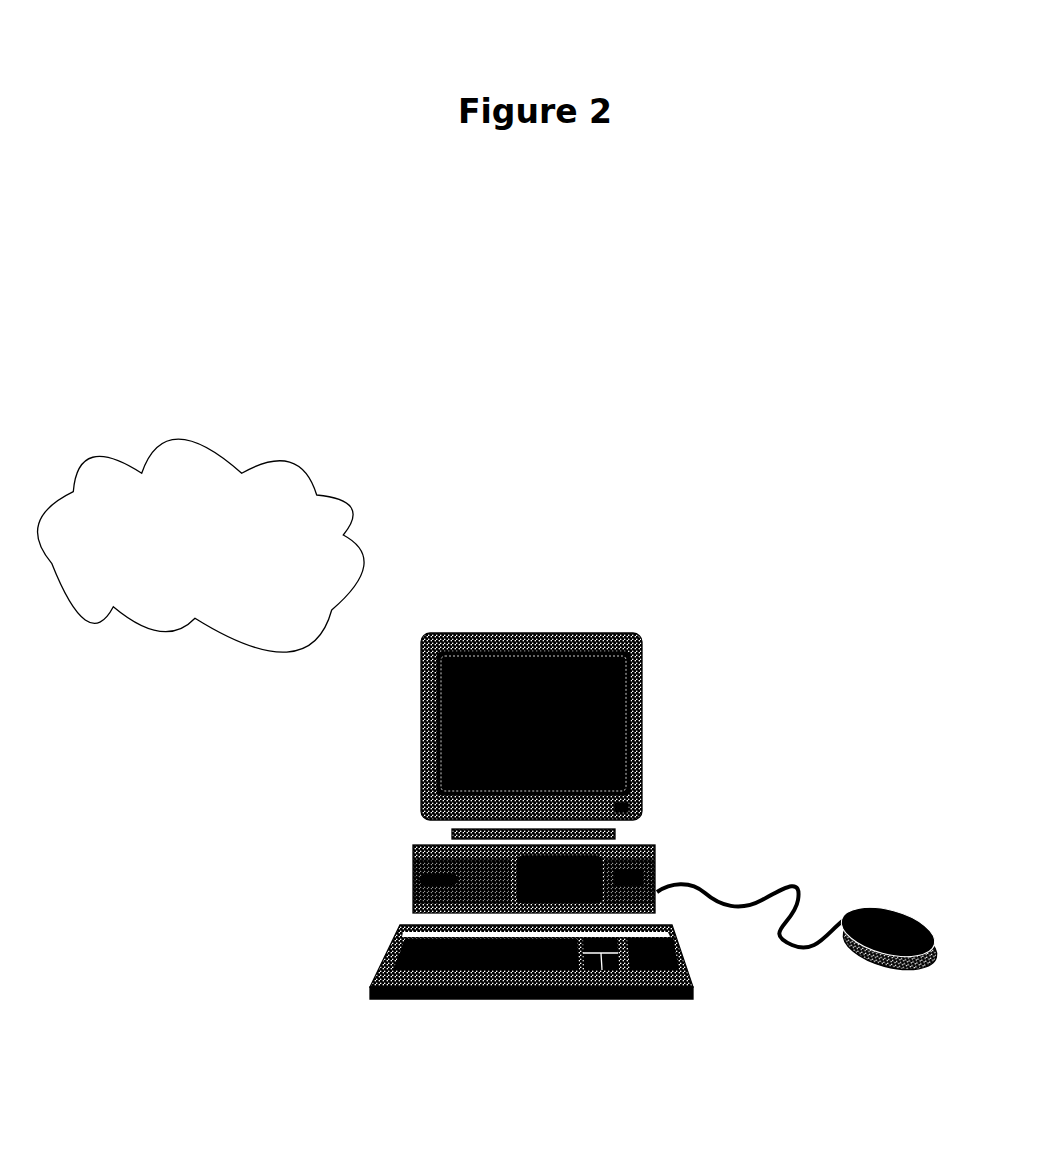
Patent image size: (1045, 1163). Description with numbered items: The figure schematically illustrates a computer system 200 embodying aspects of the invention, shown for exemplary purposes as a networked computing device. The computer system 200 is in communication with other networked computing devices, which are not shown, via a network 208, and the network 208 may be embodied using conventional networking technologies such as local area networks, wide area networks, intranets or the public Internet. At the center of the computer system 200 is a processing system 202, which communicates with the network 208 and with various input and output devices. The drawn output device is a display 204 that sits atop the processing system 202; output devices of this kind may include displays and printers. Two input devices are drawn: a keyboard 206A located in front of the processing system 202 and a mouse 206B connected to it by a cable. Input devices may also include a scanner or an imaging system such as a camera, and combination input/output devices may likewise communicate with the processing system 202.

The computer system 200 is at (688, 512).
The processing system 202 is at (655, 855).
The output device 204 is at (647, 680).
The keyboard 206A is at (580, 995).
The mouse 206B is at (858, 953).
The network 208 is at (410, 886).